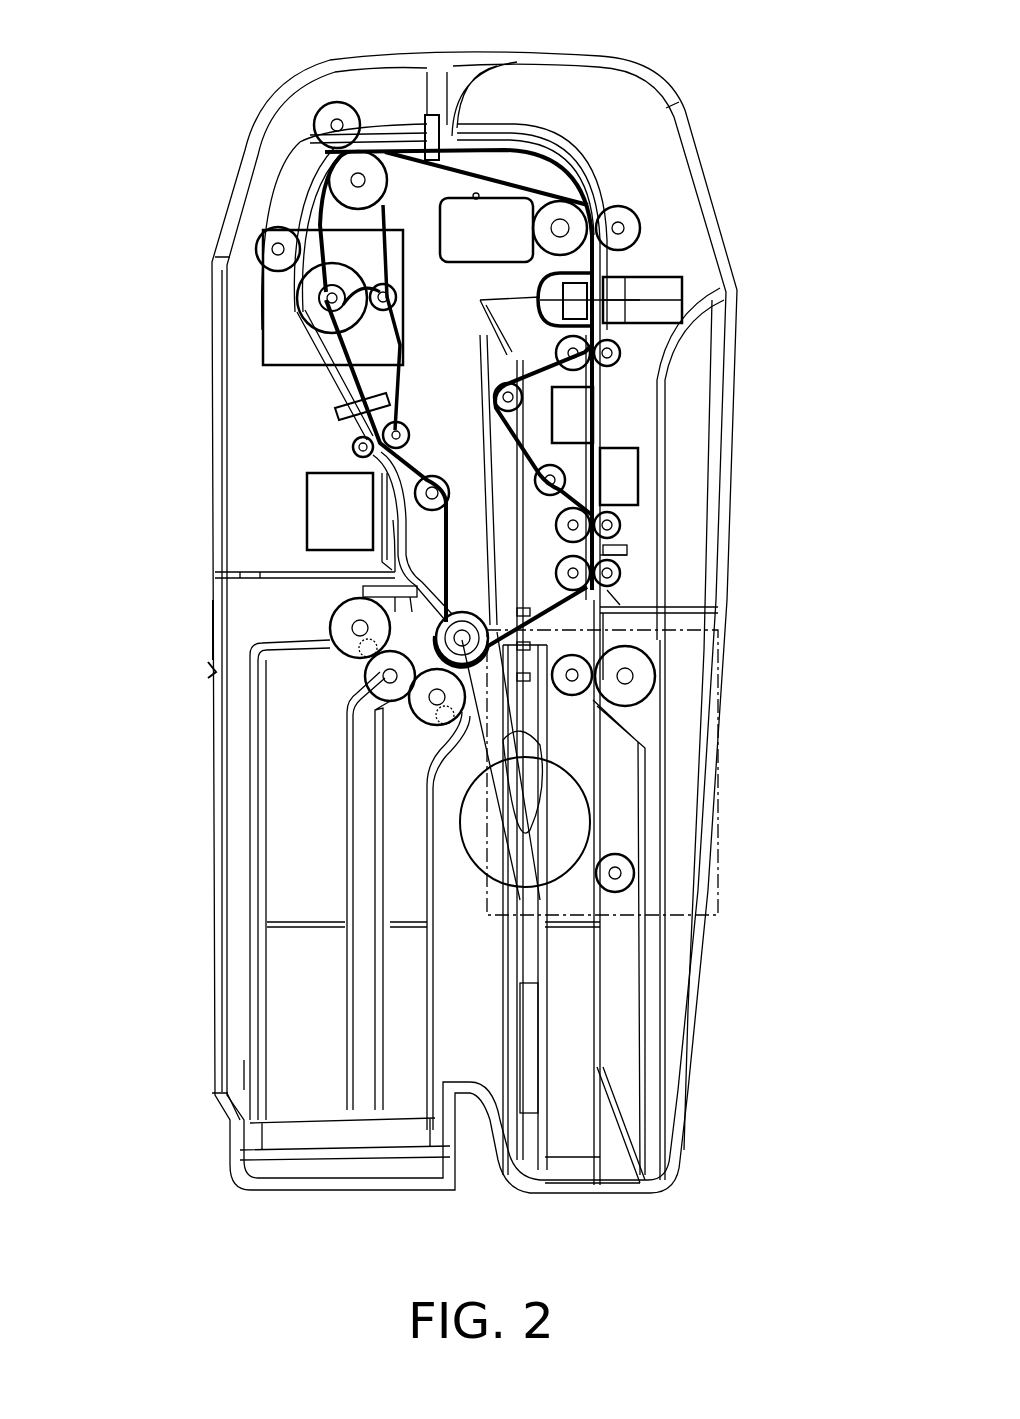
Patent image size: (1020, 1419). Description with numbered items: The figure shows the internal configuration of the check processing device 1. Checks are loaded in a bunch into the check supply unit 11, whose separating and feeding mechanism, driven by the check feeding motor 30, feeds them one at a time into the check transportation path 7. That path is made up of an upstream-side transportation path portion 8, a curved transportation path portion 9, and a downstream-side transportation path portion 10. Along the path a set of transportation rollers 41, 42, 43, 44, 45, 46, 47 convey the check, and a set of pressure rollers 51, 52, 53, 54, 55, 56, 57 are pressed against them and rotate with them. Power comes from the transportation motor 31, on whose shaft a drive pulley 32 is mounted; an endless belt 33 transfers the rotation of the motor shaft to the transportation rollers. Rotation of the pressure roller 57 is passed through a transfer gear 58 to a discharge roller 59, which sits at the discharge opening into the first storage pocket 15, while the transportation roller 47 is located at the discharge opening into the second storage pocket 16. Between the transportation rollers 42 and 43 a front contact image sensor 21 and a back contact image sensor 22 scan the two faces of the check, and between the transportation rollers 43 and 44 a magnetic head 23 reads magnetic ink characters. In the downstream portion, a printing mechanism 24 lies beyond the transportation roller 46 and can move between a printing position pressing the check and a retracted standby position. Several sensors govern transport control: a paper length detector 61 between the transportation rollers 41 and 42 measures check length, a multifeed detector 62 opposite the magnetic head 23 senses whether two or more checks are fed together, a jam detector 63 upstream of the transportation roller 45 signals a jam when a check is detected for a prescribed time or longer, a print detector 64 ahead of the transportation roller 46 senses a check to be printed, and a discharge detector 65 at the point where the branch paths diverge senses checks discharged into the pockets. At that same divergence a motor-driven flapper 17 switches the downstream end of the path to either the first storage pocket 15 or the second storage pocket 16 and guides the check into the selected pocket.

The check processing device 1 is at (765, 160).
The check transportation path 7 is at (532, 136).
The upstream-side transportation path portion 8 is at (785, 318).
The curved transportation path portion 9 is at (462, 108).
The downstream-side transportation path portion 10 is at (342, 395).
The check supply unit 11 is at (573, 1013).
The first storage pocket 15 is at (306, 1028).
The second storage pocket 16 is at (415, 1062).
The flapper 17 is at (393, 575).
The front contact image sensor 21 is at (632, 472).
The back contact image sensor 22 is at (583, 430).
The magnetic head 23 is at (612, 290).
The printing mechanism 24 is at (320, 487).
The check feeding motor 30 is at (597, 820).
The transportation motor 31 is at (298, 310).
The drive pulley 32 is at (328, 302).
The endless belt 33 is at (302, 214).
The transportation roller 41 is at (618, 543).
The transportation roller 42 is at (612, 518).
The transportation roller 43 is at (557, 351).
The transportation roller 44 is at (550, 246).
The transportation roller 45 is at (355, 178).
The transportation roller 46 is at (383, 436).
The transportation roller 47 is at (460, 610).
The pressure roller 51 is at (618, 568).
The pressure roller 52 is at (618, 516).
The pressure roller 53 is at (612, 342).
The pressure roller 54 is at (623, 214).
The pressure roller 55 is at (320, 118).
The pressure roller 56 is at (353, 447).
The pressure roller 57 is at (432, 715).
The transfer gear 58 is at (387, 679).
The discharge roller 59 is at (355, 632).
The paper length detector 61 is at (627, 555).
The multifeed detector 62 is at (598, 312).
The jam detector 63 is at (440, 113).
The print detector 64 is at (338, 412).
The discharge detector 65 is at (362, 591).